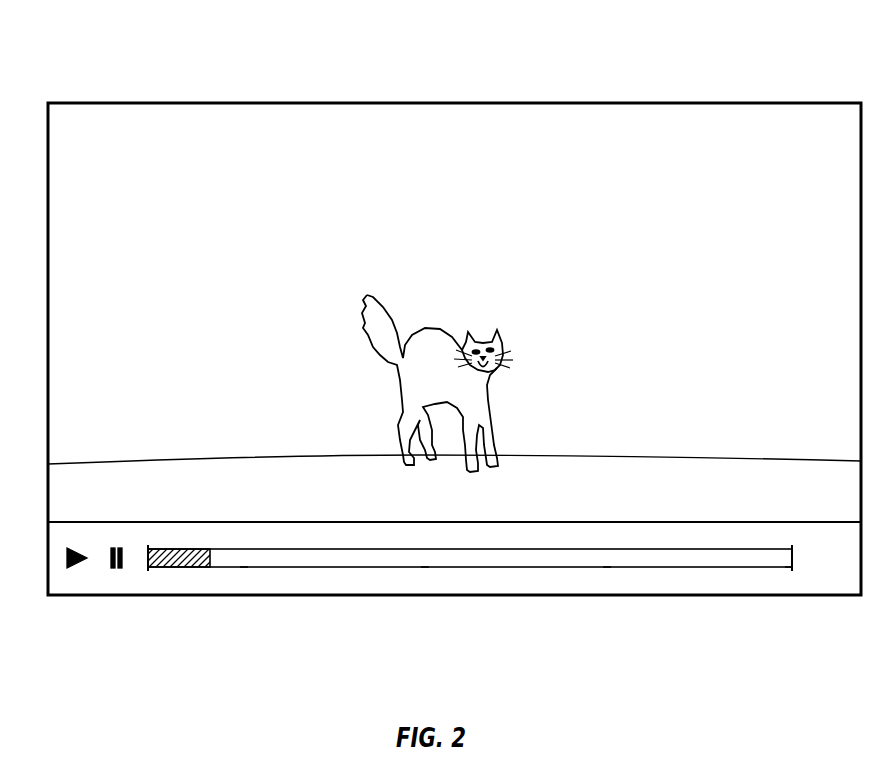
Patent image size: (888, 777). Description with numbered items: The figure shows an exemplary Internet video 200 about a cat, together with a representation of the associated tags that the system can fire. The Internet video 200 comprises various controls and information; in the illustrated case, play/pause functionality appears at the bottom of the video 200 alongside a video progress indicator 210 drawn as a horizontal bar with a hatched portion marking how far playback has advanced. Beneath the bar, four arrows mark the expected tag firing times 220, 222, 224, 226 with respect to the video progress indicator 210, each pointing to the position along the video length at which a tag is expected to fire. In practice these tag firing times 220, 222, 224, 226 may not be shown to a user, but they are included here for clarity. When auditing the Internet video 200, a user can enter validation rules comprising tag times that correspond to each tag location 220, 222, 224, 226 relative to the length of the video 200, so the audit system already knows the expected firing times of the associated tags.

The Internet video 200 is at (764, 64).
The video progress indicator 210 is at (183, 567).
The expected tag firing time 220 is at (244, 578).
The expected tag firing time 222 is at (425, 578).
The expected tag firing time 224 is at (607, 578).
The expected tag firing time 226 is at (789, 578).